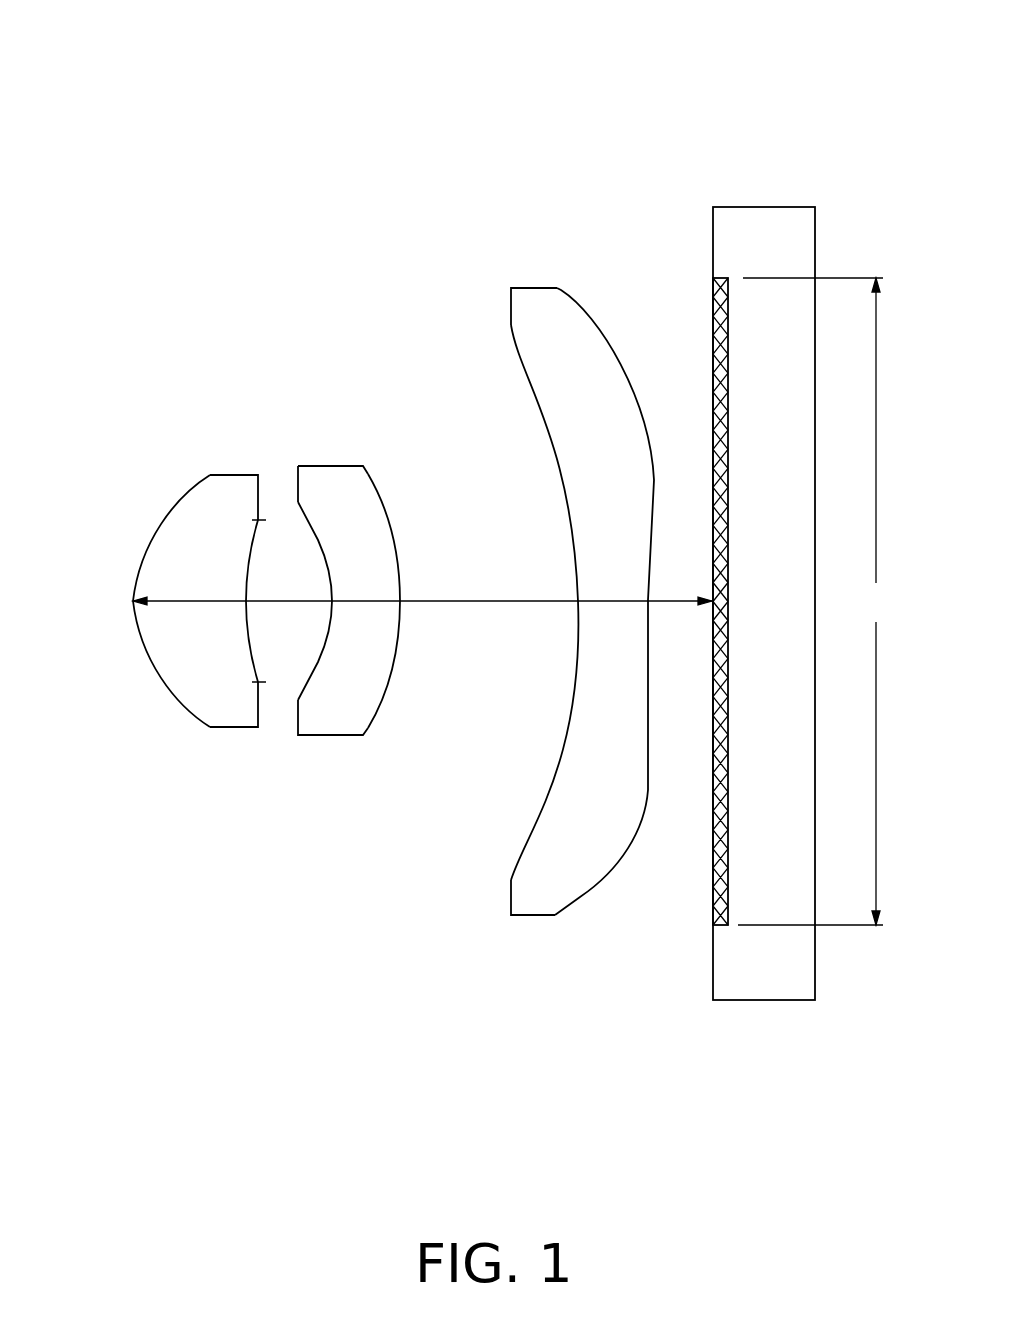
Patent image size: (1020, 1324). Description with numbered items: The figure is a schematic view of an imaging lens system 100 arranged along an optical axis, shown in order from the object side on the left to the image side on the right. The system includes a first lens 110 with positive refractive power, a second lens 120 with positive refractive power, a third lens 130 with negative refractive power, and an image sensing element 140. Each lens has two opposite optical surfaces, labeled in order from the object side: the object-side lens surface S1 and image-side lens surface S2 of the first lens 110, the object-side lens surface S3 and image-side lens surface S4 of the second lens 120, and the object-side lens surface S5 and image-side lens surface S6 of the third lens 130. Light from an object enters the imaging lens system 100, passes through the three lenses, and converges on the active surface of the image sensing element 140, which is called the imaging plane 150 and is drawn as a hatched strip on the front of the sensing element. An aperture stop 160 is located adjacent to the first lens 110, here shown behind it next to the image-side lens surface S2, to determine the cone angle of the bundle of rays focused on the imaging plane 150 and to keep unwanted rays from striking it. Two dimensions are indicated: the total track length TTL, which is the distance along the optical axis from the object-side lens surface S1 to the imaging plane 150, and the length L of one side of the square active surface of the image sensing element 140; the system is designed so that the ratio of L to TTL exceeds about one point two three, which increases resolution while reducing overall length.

The imaging lens system 100 is at (475, 41).
The first lens 110 is at (157, 580).
The second lens 120 is at (345, 551).
The third lens 130 is at (534, 595).
The image sensing element 140 is at (775, 245).
The imaging plane 150 is at (713, 293).
The aperture stop 160 is at (258, 683).
The object-side lens surface of the first lens S1 is at (160, 685).
The image-side lens surface of the first lens S2 is at (248, 633).
The object-side lens surface of the second lens S3 is at (317, 540).
The image-side lens surface of the second lens S4 is at (388, 530).
The object-side lens surface of the third lens S5 is at (537, 407).
The image-side lens surface of the third lens S6 is at (610, 868).
The total track length TTL is at (422, 623).
The length of one side of the active surface L is at (811, 601).